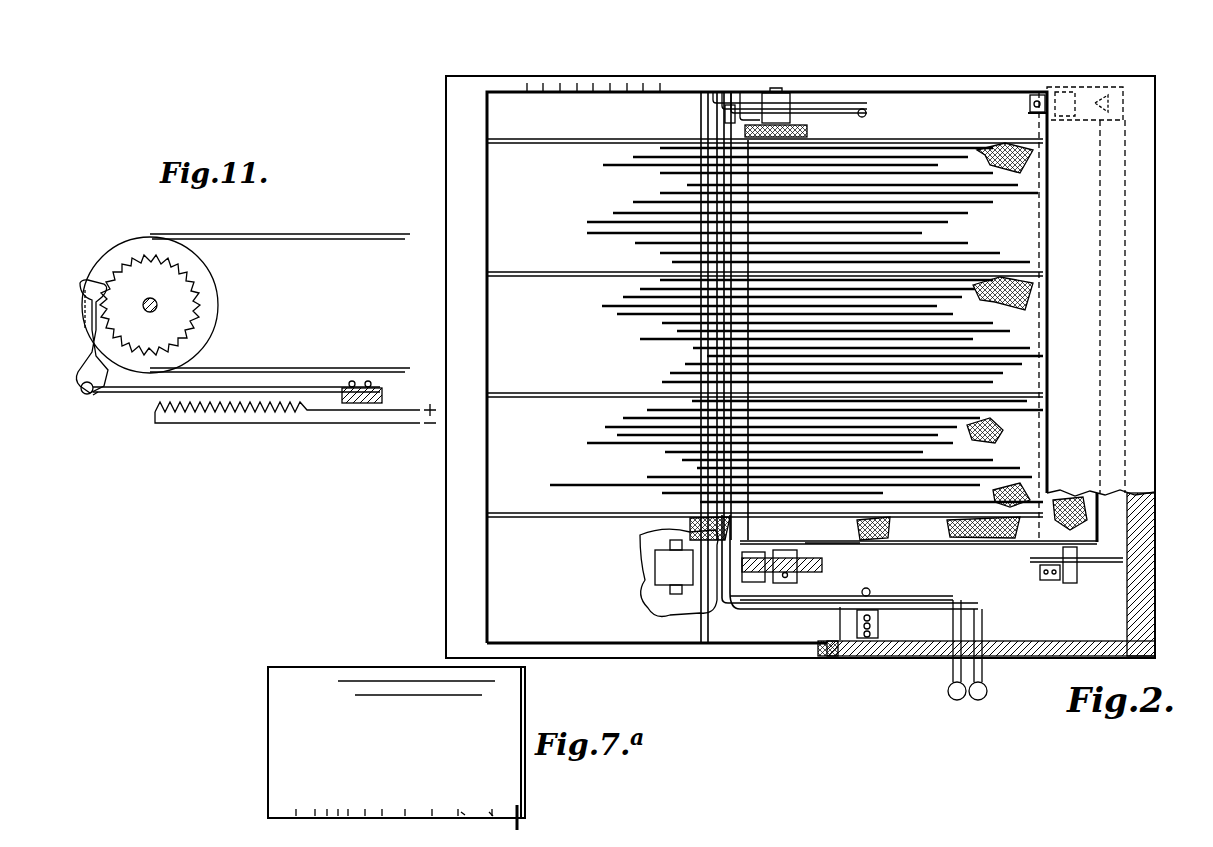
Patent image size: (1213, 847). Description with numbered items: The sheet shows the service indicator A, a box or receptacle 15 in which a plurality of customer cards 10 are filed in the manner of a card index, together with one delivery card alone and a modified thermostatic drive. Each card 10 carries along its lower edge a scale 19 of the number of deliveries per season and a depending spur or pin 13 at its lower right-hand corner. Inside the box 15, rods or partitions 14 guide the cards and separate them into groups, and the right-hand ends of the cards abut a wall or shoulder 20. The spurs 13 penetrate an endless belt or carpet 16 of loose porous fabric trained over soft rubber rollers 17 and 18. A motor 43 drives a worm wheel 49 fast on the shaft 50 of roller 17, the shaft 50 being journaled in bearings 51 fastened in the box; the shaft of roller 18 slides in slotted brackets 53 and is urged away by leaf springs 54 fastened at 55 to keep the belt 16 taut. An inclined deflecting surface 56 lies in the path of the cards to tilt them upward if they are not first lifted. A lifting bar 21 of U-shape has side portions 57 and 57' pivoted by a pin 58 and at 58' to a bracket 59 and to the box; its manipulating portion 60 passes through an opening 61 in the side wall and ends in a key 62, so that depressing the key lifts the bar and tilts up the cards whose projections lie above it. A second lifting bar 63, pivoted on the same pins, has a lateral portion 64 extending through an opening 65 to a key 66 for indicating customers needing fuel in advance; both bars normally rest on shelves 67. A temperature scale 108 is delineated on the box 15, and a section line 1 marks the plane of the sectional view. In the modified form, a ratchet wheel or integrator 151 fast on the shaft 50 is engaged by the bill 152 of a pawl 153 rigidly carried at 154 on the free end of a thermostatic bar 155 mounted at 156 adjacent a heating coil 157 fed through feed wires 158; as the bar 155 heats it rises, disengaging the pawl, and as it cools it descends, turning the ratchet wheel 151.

In FIG. 11, the service indicator A is at (260, 231).
In FIG. 11, the ratchet wheel 151 is at (178, 290).
In FIG. 11, the shaft 50 is at (160, 305).
In FIG. 2, the shaft 50 is at (790, 585).
In FIG. 11, the bill 152 is at (95, 292).
In FIG. 11, the pawl 153 is at (78, 384).
In FIG. 11, the pawl mounting 154 is at (96, 398).
In FIG. 11, the thermostatic bar 155 is at (242, 388).
In FIG. 11, the mounting 156 is at (363, 385).
In FIG. 11, the heating coil 157 is at (236, 412).
In FIG. 11, the feed wires 158 is at (375, 423).
In FIG. 7A, the cards 10 is at (526, 786).
In FIG. 2, the cards 10 is at (968, 213).
In FIG. 7A, the scale 19 is at (492, 813).
In FIG. 7A, the spur 13 is at (522, 819).
In FIG. 2, the rods or partitions 14 is at (528, 140).
In FIG. 2, the box 15 is at (1164, 543).
In FIG. 2, the endless belt 16 is at (955, 138).
In FIG. 2, the roller 17 is at (813, 547).
In FIG. 2, the roller 18 is at (1057, 552).
In FIG. 2, the shoulder 20 is at (1056, 441).
In FIG. 2, the lifting bar 21 is at (703, 522).
In FIG. 2, the motor 43 is at (651, 601).
In FIG. 2, the worm wheel 49 is at (805, 572).
In FIG. 2, the bearings / roller shaft 51 is at (1062, 105).
In FIG. 2, the brackets 53 is at (1108, 98).
In FIG. 2, the leaf springs 54 is at (1055, 84).
In FIG. 2, the spring fastening 55 is at (1028, 100).
In FIG. 2, the inclined deflecting surface 56 is at (707, 195).
In FIG. 2, the side portion 57 is at (822, 666).
In FIG. 2, the side portion 57' is at (833, 93).
In FIG. 2, the pin 58 is at (887, 580).
In FIG. 2, the pivot 58' is at (888, 116).
In FIG. 2, the bracket 59 is at (863, 660).
In FIG. 2, the manipulating portion 60 is at (952, 673).
In FIG. 2, the opening 61 is at (855, 517).
In FIG. 2, the key 62 is at (957, 700).
In FIG. 2, the lifting bar 63 is at (727, 118).
In FIG. 2, the lateral portion 64 is at (985, 677).
In FIG. 2, the opening 65 is at (997, 641).
In FIG. 2, the key 66 is at (985, 700).
In FIG. 2, the shelves 67 is at (742, 100).
In FIG. 2, the scale 108 is at (573, 96).
In FIG. 2, the section line 1 is at (424, 606).